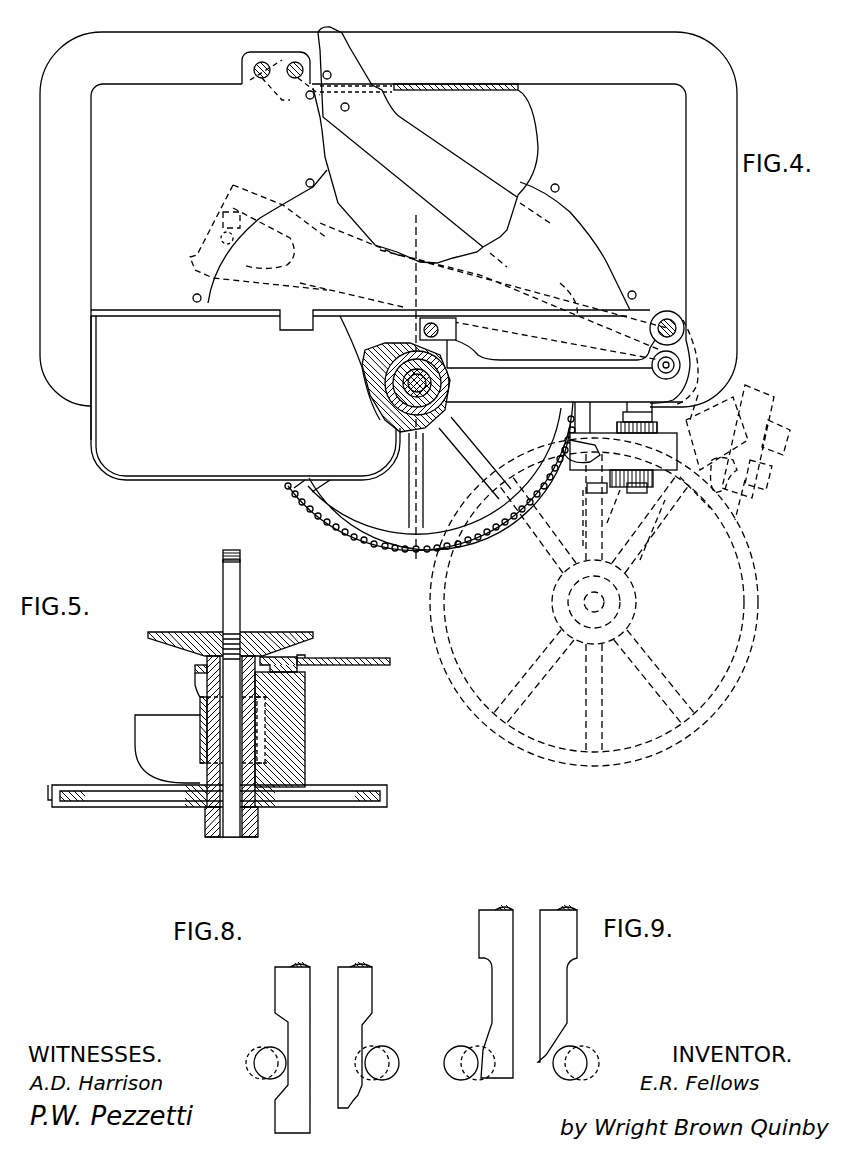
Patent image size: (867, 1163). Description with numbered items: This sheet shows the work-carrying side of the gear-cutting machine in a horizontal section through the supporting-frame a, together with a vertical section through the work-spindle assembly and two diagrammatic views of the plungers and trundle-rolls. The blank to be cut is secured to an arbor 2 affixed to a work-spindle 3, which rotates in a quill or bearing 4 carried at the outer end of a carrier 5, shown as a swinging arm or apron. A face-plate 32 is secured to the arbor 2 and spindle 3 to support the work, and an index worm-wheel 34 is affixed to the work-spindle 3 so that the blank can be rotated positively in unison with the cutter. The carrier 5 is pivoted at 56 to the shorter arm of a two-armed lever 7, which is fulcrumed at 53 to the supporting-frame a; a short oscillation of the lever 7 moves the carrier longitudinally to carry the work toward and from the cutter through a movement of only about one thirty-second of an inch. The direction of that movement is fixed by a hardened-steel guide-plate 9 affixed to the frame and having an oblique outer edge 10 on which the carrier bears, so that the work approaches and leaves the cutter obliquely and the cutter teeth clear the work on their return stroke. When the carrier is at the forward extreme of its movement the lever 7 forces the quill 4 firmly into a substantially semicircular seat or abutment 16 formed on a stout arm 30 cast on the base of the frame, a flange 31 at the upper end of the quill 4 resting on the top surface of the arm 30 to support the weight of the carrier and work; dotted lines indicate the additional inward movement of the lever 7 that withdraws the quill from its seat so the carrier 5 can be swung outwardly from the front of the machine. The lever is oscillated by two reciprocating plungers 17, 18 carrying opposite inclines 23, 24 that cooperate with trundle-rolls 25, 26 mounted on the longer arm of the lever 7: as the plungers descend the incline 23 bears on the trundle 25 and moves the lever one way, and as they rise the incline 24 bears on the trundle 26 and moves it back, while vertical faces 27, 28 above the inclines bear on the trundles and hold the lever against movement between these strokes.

In FIG. 4, the supporting-frame a is at (683, 237).
In FIG. 4, the arbor 2 is at (452, 378).
In FIG. 5, the arbor 2 is at (240, 600).
In FIG. 4, the work-spindle 3 is at (440, 400).
In FIG. 5, the work-spindle 3 is at (275, 663).
In FIG. 4, the quill or bearing 4 is at (472, 370).
In FIG. 5, the quill or bearing 4 is at (282, 710).
In FIG. 4, the carrier 5 is at (530, 408).
In FIG. 5, the carrier 5 is at (198, 740).
In FIG. 4, the two-armed lever 7 is at (478, 190).
In FIG. 4, the guide-plate 9 is at (458, 333).
In FIG. 4, the oblique outer edge 10 is at (424, 335).
In FIG. 4, the seat or abutment 16 is at (377, 403).
In FIG. 4, the plunger 17 is at (292, 80).
In FIG. 8, the plunger 17 is at (365, 1005).
In FIG. 9, the plunger 17 is at (575, 927).
In FIG. 4, the plunger 18 is at (262, 80).
In FIG. 8, the plunger 18 is at (285, 985).
In FIG. 9, the plunger 18 is at (485, 931).
In FIG. 8, the incline 23 is at (360, 1095).
In FIG. 9, the incline 23 is at (548, 1060).
In FIG. 8, the incline 24 is at (282, 1096).
In FIG. 9, the incline 24 is at (500, 1080).
In FIG. 8, the trundle-roll 25 is at (398, 1055).
In FIG. 9, the trundle-roll 25 is at (573, 1046).
In FIG. 8, the trundle-roll 26 is at (275, 1052).
In FIG. 9, the trundle-roll 26 is at (463, 1046).
In FIG. 8, the vertical face 27 is at (368, 1035).
In FIG. 9, the vertical face 27 is at (572, 985).
In FIG. 8, the vertical face 28 is at (292, 1040).
In FIG. 9, the vertical face 28 is at (492, 978).
In FIG. 4, the stout arm 30 is at (375, 358).
In FIG. 5, the flange 31 is at (193, 668).
In FIG. 5, the face-plate 32 is at (188, 635).
In FIG. 4, the index worm-wheel 34 is at (406, 546).
In FIG. 5, the index worm-wheel 34 is at (133, 800).
In FIG. 4, the fulcrum 53 is at (680, 318).
In FIG. 4, the pivot 56 is at (652, 360).